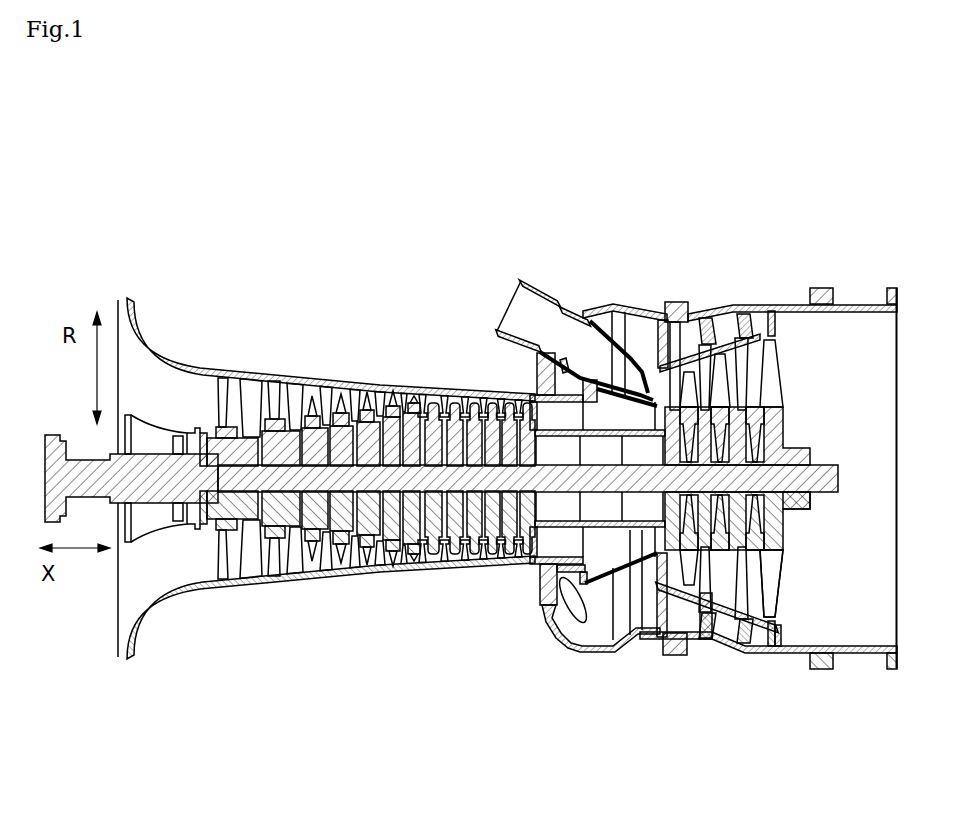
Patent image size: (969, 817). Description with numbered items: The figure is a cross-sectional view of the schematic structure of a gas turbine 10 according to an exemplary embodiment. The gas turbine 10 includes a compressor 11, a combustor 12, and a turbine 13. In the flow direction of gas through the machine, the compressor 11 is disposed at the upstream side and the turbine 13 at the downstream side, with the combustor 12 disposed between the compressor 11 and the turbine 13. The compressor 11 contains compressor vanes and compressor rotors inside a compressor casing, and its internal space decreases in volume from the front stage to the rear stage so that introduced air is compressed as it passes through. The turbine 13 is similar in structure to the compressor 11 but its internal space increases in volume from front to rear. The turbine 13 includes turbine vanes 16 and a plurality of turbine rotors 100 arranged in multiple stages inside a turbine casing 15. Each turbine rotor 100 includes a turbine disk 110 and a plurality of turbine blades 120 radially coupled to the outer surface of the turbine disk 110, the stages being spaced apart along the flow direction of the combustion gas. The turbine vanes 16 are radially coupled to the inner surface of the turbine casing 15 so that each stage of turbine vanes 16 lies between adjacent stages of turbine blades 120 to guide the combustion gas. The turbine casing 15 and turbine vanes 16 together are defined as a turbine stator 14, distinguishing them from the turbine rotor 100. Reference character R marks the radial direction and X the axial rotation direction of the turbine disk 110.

The gas turbine 10 is at (125, 212).
The compressor 11 is at (255, 358).
The combustor 12 is at (541, 268).
The turbine 13 is at (757, 278).
The turbine stator 14 is at (685, 215).
The turbine casing 15 is at (680, 358).
The turbine vanes 16 is at (714, 370).
The turbine rotor 100 is at (718, 598).
The turbine disk 110 is at (778, 556).
The turbine blades 120 is at (770, 590).